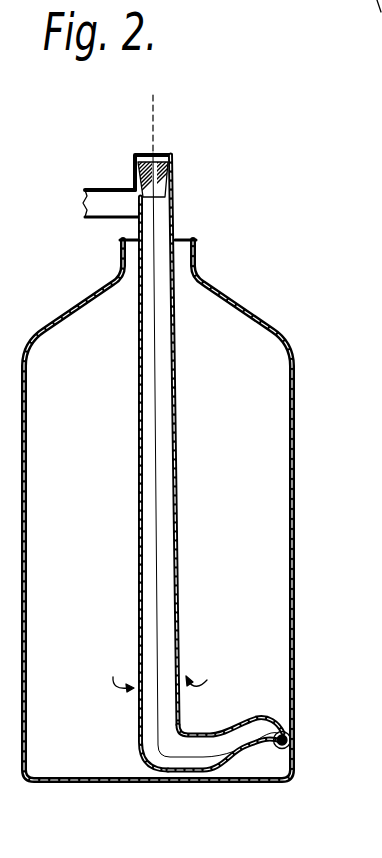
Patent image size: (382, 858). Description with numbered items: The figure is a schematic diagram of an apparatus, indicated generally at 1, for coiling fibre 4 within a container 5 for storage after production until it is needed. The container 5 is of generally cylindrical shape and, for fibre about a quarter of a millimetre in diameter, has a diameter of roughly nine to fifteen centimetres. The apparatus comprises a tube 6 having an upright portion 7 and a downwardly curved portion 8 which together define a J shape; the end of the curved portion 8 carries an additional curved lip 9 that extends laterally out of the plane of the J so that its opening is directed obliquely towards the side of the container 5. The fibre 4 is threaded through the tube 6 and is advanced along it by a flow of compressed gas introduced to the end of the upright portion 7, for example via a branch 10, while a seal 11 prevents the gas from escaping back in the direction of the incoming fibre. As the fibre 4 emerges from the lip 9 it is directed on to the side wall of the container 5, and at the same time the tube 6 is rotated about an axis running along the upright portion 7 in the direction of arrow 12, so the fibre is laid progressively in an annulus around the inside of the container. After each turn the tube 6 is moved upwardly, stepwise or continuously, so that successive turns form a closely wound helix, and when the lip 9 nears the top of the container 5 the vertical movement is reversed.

The dispensing container assembly 1 is at (381, 27).
The fibre 4 is at (157, 272).
The container 5 is at (297, 647).
The tube 6 is at (190, 467).
The upright portion 7 is at (178, 565).
The downwardly curved portion 8 is at (205, 763).
The curved lip 9 is at (278, 724).
The branch 10 is at (103, 190).
The seal 11 is at (172, 178).
The arrow 12 is at (207, 680).